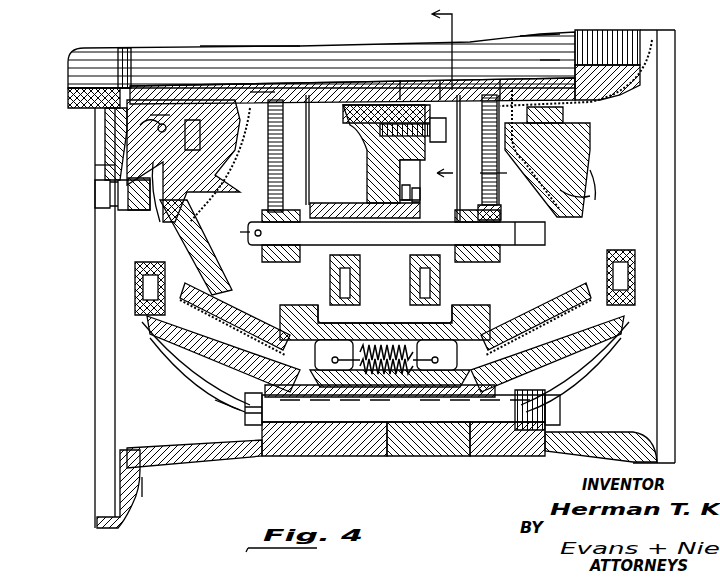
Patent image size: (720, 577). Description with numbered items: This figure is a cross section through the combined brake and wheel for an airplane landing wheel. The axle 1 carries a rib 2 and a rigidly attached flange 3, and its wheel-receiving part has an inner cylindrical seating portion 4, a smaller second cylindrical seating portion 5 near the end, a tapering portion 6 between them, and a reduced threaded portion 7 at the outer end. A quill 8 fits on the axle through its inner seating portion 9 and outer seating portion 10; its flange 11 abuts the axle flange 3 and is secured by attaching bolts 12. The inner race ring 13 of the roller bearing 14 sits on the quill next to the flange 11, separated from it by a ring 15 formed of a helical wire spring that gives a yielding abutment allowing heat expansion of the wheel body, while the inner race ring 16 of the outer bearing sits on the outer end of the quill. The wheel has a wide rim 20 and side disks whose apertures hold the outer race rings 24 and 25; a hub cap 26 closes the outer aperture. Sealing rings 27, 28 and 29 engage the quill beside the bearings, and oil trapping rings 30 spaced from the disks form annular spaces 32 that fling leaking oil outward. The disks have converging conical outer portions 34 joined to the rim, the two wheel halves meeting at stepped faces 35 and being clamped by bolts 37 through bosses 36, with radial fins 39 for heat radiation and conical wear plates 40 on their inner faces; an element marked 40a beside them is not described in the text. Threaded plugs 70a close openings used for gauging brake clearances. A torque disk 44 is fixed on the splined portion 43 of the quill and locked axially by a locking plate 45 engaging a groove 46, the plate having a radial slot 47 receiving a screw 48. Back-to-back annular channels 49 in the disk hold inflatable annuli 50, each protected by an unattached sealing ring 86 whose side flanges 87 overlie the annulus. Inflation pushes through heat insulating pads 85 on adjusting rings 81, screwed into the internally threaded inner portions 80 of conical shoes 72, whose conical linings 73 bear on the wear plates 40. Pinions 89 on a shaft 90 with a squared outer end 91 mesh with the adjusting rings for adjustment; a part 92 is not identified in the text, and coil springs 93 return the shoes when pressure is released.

The axle 1 is at (90, 60).
The rib 2 is at (125, 55).
The flange 3 is at (107, 135).
The inner cylindrical seating portion 4 is at (240, 46).
The second cylindrical seating portion 5 is at (535, 40).
The tapering portion 6 is at (335, 45).
The reduced threaded portion 7 is at (612, 36).
The quill 8 is at (300, 95).
The inner seating portion 9 is at (162, 124).
The outer seating portion 10 is at (550, 56).
The flange 11 is at (100, 170).
The attaching bolts 12 is at (110, 212).
The inner race ring 13 is at (165, 120).
The roller bearing 14 is at (212, 120).
The ring 15 is at (156, 124).
The inner race ring 16 is at (585, 108).
The rim 20 is at (355, 458).
The outer race ring 24 is at (195, 236).
The outer race ring 25 is at (560, 122).
The hub cap 26 is at (655, 62).
The sealing ring 27 is at (498, 73).
The sealing ring 28 is at (262, 79).
The sealing ring 29 is at (152, 210).
The oil trapping rings 30 is at (283, 120).
The annular spaces 32 is at (284, 150).
The converging conical outer portions 34 is at (215, 378).
The stepped faces 35 is at (390, 458).
The bosses 36 is at (395, 410).
The bolts 37 is at (475, 458).
The radial fins 39 is at (195, 360).
The conical wear plates 40 is at (224, 412).
The brake drum 40a is at (150, 322).
The central splined portion 43 is at (345, 110).
The torque disk 44 is at (367, 185).
The locking plate 45 is at (415, 142).
The circumferential groove 46 is at (402, 84).
The radial slot 47 is at (442, 90).
The screw 48 is at (367, 160).
The annular channels 49 is at (385, 289).
The inflatable annulus 50 is at (362, 264).
The threaded plugs 70a is at (136, 298).
The conical shoes 72 is at (378, 408).
The conical lining 73 is at (175, 345).
The internally threaded inner portion 80 is at (250, 300).
The adjusting ring 81 is at (380, 351).
The heat insulating pad 85 is at (396, 233).
The sealing ring 86 is at (491, 233).
The side flanges 87 is at (381, 236).
The pinions 89 is at (258, 222).
The shaft 90 is at (248, 233).
The squared outer end 91 is at (586, 183).
The small bolt 92 is at (426, 181).
The coil springs 93 is at (403, 408).